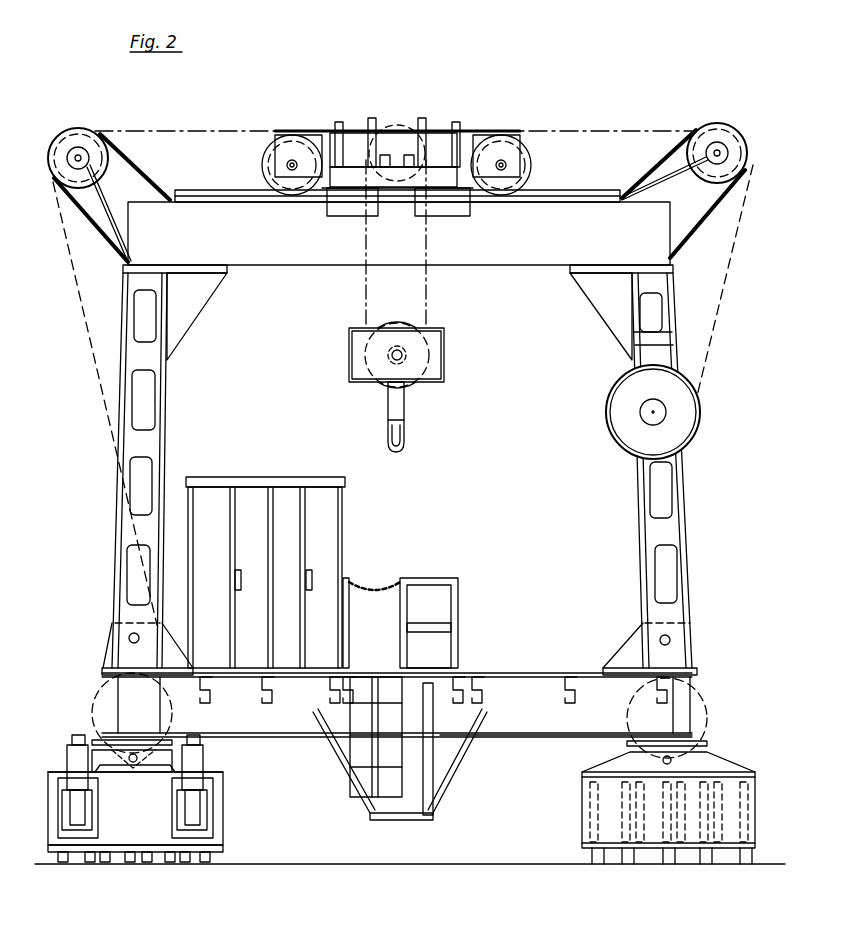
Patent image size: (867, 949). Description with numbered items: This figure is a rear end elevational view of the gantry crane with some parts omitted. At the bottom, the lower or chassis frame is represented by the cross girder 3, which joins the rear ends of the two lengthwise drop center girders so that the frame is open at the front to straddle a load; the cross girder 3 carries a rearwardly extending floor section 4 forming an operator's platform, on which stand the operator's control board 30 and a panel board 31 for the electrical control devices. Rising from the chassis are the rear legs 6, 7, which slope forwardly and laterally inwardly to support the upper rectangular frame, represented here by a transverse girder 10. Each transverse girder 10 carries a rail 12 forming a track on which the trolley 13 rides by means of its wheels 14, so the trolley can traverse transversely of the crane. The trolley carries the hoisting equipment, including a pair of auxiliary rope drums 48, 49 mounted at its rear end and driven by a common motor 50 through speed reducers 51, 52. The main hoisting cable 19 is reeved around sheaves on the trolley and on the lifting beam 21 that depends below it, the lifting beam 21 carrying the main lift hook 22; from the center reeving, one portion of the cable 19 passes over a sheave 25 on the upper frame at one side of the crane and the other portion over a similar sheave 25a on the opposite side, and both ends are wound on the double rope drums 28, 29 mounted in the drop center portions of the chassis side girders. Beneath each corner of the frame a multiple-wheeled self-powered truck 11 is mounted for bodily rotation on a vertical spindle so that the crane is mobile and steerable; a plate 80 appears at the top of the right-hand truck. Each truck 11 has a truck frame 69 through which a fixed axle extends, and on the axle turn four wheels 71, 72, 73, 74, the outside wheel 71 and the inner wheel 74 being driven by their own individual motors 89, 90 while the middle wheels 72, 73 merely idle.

The cross girder 3 is at (545, 690).
The floor section 4 is at (440, 673).
The rear leg 6 is at (640, 497).
The rear leg 7 is at (150, 452).
The transverse girder 10 is at (485, 265).
The truck 11 is at (234, 792).
The rail 12 is at (585, 192).
The trolley 13 is at (488, 128).
The wheels 14 is at (522, 158).
The main hoisting cable 19 is at (366, 283).
The lifting beam 21 is at (435, 362).
The main lift hook 22 is at (404, 440).
The sheave 25 is at (84, 135).
The sheave 25a is at (730, 128).
The double rope drum 28 is at (705, 700).
The double rope drum 29 is at (97, 702).
The operator's control board 30 is at (425, 578).
The panel board 31 is at (245, 497).
The rope drum 48 is at (440, 140).
The rope drum 49 is at (352, 140).
The motor 50 is at (397, 135).
The speed reducer 51 is at (422, 118).
The speed reducer 52 is at (372, 118).
The truck frame 69 is at (140, 835).
The wheel 71 is at (68, 862).
The wheel 72 is at (112, 862).
The wheel 73 is at (160, 862).
The wheel 74 is at (198, 862).
The bolster plate 80 is at (627, 744).
The motor 89 is at (75, 760).
The motor 90 is at (195, 765).